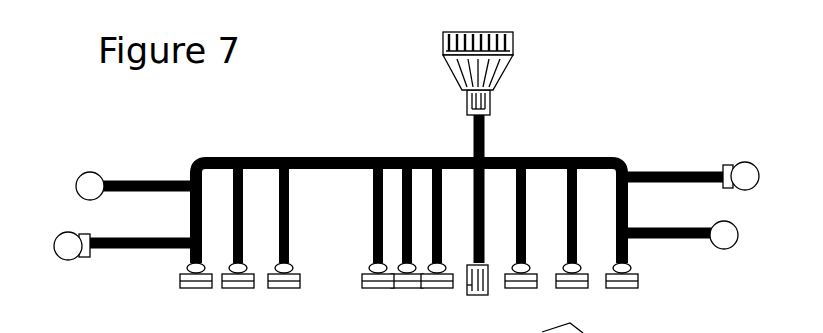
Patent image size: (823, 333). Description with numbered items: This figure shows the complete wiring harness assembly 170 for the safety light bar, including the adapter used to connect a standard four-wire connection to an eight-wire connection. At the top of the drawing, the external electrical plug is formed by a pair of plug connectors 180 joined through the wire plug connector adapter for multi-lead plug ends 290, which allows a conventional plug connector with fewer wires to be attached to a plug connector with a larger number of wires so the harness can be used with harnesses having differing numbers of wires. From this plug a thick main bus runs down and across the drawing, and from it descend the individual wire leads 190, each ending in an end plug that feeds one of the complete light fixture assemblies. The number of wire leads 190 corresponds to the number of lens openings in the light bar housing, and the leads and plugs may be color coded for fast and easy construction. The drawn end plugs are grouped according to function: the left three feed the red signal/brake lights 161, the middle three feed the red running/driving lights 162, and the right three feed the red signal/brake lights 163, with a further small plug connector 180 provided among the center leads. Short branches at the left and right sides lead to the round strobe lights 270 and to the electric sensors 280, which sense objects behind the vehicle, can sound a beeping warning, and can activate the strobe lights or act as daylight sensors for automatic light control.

The wiring harness assembly 170 is at (190, 155).
The plug connectors 180 is at (437, 36).
The wire plug connector adapter for multi-lead plug ends 290 is at (440, 63).
The wire leads 190 is at (365, 229).
The electric sensors 280 is at (78, 162).
The strobe lights 270 is at (54, 227).
The signal/brake lights 161 is at (170, 280).
The running/driving lights 162 is at (351, 296).
The signal/brake lights 163 is at (663, 290).